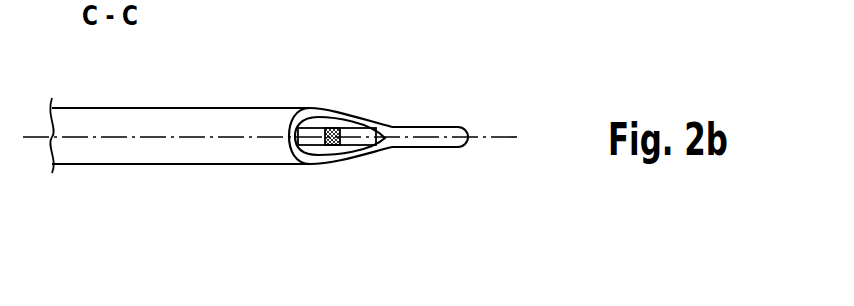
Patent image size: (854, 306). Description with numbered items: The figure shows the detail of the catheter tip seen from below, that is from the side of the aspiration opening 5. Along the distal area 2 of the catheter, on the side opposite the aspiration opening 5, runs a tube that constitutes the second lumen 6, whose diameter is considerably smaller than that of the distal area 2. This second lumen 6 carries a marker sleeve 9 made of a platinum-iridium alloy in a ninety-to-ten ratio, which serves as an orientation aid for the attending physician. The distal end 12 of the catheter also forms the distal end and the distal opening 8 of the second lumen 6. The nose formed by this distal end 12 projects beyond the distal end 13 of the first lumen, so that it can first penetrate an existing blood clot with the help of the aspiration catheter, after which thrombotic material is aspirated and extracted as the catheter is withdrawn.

The distal area 2 is at (220, 117).
The aspiration opening 5 is at (347, 155).
The second lumen 6 is at (360, 131).
The distal opening 8 is at (470, 125).
The marker sleeve 9 is at (332, 147).
The distal end 12 is at (470, 132).
The distal end of the first lumen 13 is at (385, 143).